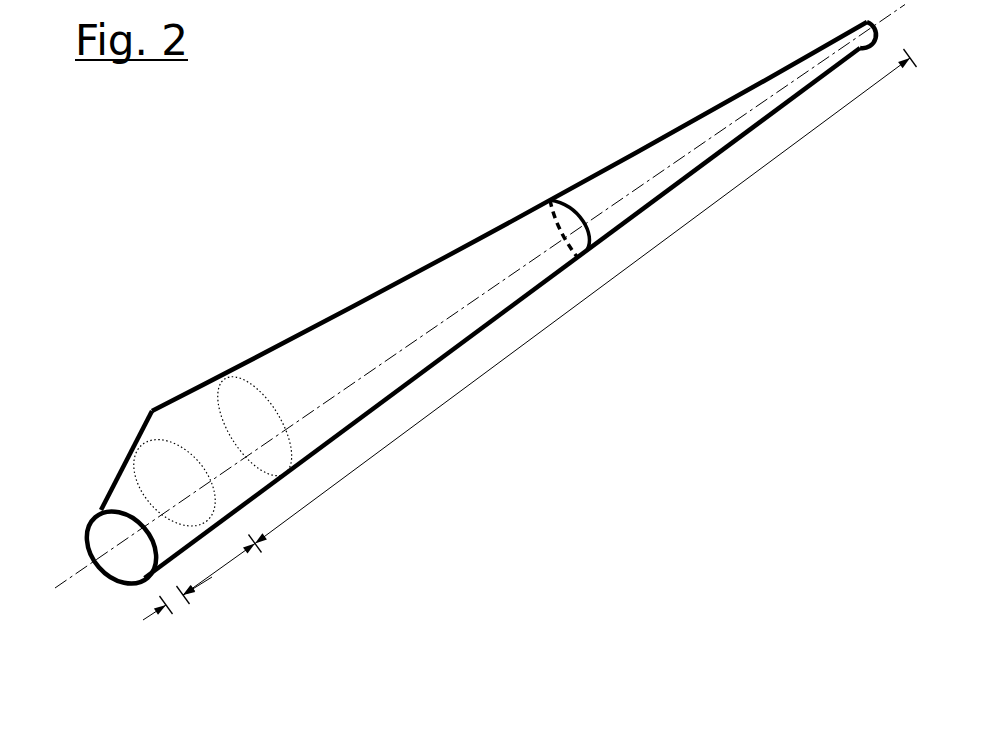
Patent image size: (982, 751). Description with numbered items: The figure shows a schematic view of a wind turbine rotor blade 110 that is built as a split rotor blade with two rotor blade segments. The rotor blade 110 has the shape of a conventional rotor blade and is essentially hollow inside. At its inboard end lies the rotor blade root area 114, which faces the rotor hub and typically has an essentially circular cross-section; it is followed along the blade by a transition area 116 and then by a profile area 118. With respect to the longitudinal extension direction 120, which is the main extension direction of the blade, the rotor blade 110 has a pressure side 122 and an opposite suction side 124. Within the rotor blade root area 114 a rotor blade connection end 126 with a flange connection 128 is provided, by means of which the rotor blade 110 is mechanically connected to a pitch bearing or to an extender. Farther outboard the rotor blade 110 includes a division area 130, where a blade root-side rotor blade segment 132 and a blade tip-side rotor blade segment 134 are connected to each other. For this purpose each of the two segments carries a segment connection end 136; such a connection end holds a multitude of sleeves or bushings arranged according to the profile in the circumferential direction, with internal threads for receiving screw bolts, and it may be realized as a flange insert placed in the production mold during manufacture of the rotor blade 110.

The rotor blade 110 is at (565, 448).
The rotor blade root area 114 is at (179, 598).
The transition area 116 is at (237, 562).
The profile area 118 is at (575, 323).
The longitudinal extension direction 120 is at (395, 352).
The pressure side 122 is at (608, 183).
The suction side 124 is at (405, 256).
The rotor blade connection end 126 is at (125, 552).
The flange connection 128 is at (88, 543).
The division area 130 is at (620, 188).
The blade root-side rotor blade segment 132 is at (345, 345).
The blade tip-side rotor blade segment 134 is at (712, 133).
The segment connection end 136 is at (572, 205).